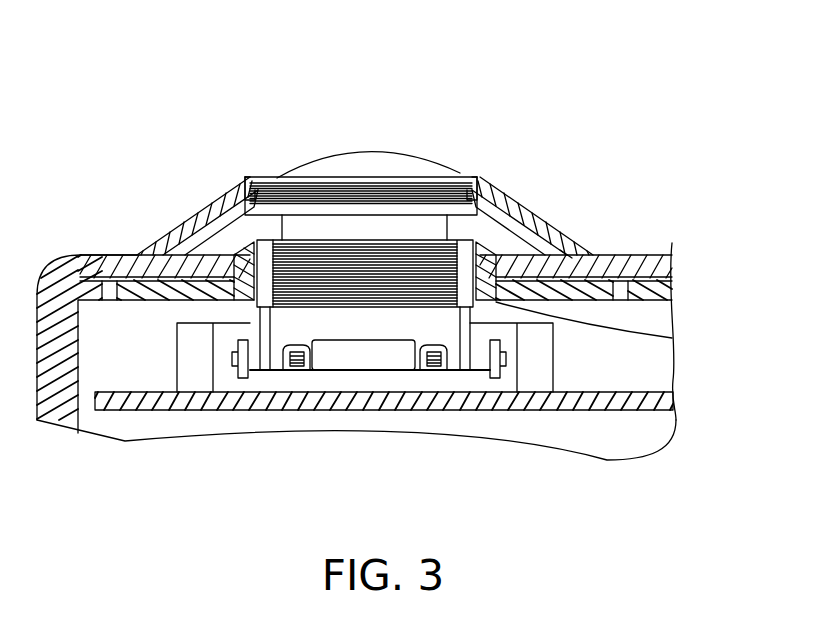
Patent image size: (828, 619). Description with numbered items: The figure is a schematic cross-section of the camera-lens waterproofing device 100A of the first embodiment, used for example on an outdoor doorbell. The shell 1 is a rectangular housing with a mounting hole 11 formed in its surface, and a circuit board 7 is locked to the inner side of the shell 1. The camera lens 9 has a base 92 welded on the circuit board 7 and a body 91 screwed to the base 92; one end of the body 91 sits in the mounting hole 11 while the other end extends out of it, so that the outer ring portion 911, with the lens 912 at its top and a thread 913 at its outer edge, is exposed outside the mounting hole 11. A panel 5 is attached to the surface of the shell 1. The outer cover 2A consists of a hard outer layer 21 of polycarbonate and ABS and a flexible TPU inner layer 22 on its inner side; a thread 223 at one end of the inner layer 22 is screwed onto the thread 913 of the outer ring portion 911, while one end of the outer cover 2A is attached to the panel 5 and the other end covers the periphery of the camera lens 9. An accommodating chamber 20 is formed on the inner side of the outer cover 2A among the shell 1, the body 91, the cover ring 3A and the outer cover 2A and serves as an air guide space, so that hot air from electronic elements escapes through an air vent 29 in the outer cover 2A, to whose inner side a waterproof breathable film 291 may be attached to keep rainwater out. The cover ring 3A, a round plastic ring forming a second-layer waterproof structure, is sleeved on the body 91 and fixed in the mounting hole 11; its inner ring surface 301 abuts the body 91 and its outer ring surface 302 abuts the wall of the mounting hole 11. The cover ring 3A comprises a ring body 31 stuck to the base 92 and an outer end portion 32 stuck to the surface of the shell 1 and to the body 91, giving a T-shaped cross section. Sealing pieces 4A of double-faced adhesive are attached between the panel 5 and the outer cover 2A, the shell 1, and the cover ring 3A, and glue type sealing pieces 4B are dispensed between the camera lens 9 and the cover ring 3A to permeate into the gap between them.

The camera-lens waterproofing device 100A is at (342, 29).
The shell 1 is at (650, 293).
The mounting hole 11 is at (672, 338).
The panel 5 is at (102, 268).
The outer cover 2A is at (127, 168).
The outer layer 21 is at (218, 212).
The inner layer 22 is at (193, 247).
The thread 223 is at (282, 200).
The outer end portion 32 is at (258, 245).
The camera lens 9 is at (350, 152).
The lens 912 is at (384, 181).
The thread 913 is at (438, 190).
The outer ring portion 911 is at (463, 183).
The accommodating chamber 20 is at (527, 240).
The air vent 29 is at (552, 237).
The waterproof breathable film 291 is at (563, 258).
The sealing pieces 4A is at (160, 268).
The outer ring surface 302 is at (234, 265).
The ring body 31 is at (245, 262).
The inner ring surface 301 is at (265, 262).
The glue type sealing pieces 4B is at (240, 280).
The body 91 is at (366, 228).
The base 92 is at (461, 300).
The cover ring 3A is at (500, 302).
The circuit board 7 is at (562, 410).